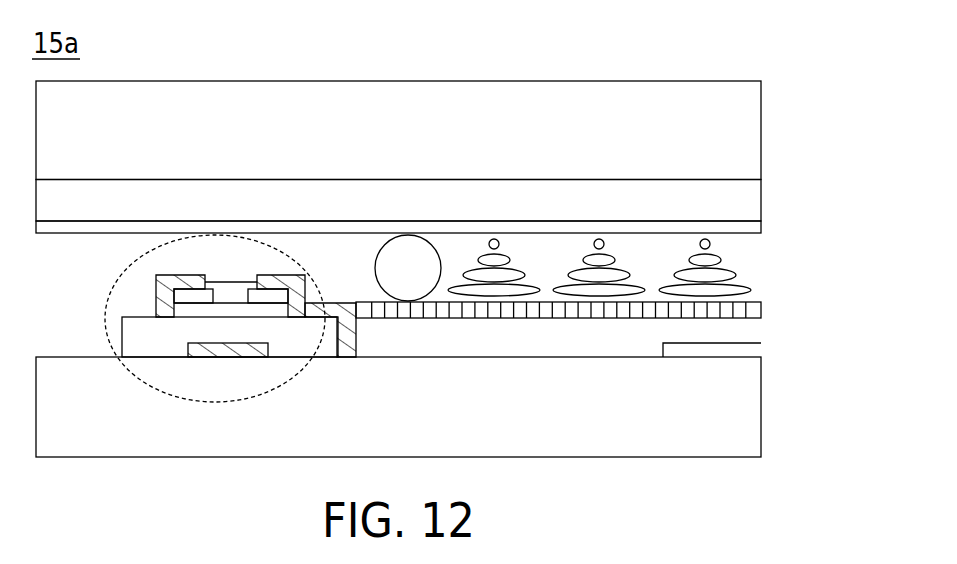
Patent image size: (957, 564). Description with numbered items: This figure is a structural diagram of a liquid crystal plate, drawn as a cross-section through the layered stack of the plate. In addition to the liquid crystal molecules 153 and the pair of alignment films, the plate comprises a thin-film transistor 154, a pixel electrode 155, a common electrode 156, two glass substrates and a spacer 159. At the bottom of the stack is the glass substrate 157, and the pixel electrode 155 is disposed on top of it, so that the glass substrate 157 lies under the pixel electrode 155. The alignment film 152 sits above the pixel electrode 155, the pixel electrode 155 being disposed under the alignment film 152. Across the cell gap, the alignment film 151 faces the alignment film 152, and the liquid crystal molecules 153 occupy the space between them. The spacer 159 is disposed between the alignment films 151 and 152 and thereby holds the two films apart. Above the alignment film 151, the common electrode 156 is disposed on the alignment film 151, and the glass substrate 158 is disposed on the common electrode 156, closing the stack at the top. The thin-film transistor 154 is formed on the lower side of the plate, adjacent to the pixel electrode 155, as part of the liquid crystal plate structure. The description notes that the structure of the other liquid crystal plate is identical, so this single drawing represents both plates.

The alignment film 151 is at (746, 226).
The alignment film 152 is at (745, 309).
The liquid crystal molecules 153 is at (730, 273).
The thin-film transistor 154 is at (109, 284).
The pixel electrode 155 is at (746, 333).
The common electrode 156 is at (746, 198).
The glass substrate 157 is at (746, 389).
The glass substrate 158 is at (746, 128).
The spacer 159 is at (391, 263).